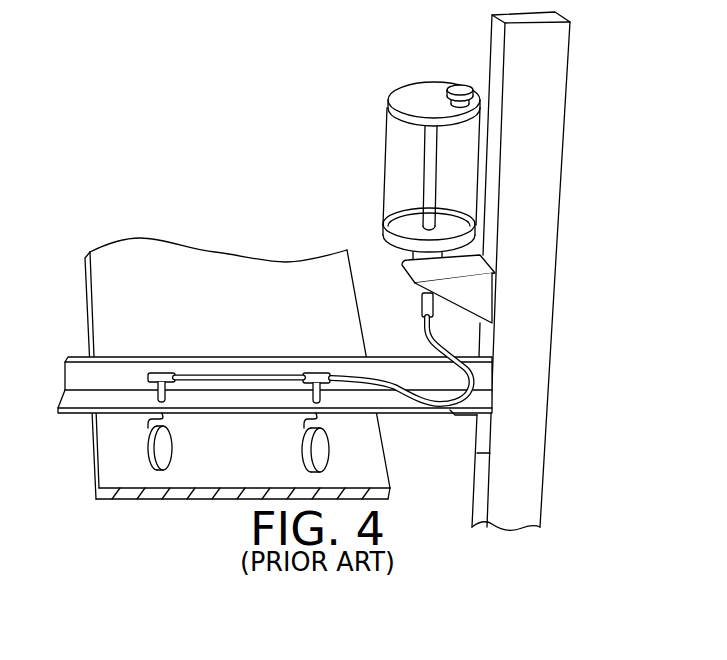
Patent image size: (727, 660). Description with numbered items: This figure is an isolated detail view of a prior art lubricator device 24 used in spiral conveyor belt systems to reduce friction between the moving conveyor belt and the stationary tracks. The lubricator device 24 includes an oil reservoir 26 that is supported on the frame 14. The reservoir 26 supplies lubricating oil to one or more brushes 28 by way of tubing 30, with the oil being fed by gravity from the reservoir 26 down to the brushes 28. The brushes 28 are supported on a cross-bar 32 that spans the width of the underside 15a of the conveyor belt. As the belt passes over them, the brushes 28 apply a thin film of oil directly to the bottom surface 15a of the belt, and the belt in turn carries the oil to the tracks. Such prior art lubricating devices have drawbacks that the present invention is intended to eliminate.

The frame 14 is at (552, 140).
The bottom surface of the belt 15a is at (198, 272).
The lubricator device 24 is at (119, 113).
The oil reservoir 26 is at (422, 100).
The brushes 28 is at (307, 438).
The tubing 30 is at (240, 380).
The cross-bar 32 is at (78, 398).